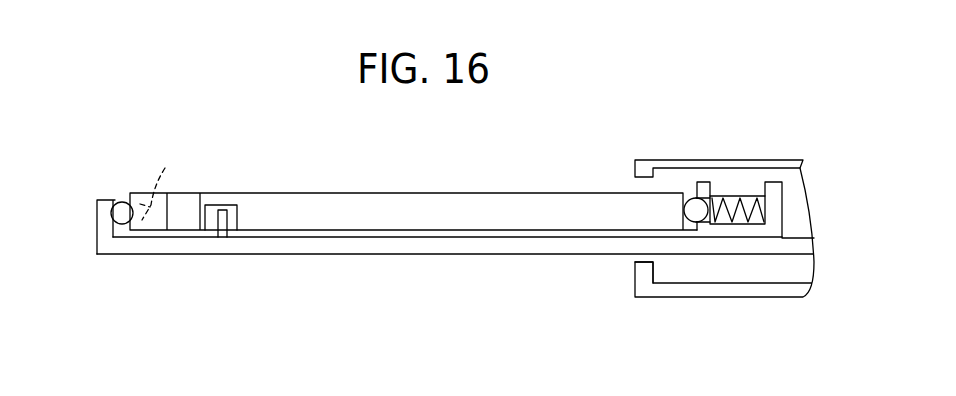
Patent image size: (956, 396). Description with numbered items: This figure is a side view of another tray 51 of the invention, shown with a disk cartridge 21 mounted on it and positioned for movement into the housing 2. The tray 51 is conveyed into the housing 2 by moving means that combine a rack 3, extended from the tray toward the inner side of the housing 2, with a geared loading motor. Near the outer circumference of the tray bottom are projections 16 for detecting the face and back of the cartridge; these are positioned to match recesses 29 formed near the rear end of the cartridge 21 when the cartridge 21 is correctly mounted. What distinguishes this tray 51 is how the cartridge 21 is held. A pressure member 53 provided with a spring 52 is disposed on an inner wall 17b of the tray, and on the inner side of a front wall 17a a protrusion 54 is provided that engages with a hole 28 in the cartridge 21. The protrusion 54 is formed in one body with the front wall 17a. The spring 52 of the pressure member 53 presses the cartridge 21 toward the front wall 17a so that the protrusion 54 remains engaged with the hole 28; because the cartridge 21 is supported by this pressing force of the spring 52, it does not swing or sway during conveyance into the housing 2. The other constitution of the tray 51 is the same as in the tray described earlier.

The housing 2 is at (645, 165).
The rack 3 is at (791, 250).
The projection 16 is at (222, 228).
The front wall 17a is at (103, 245).
The inner wall 17b is at (702, 230).
The disk cartridge 21 is at (430, 192).
The hole 28 is at (167, 187).
The recess 29 is at (234, 205).
The tray 51 is at (415, 256).
The spring 52 is at (738, 198).
The pressure member 53 is at (694, 200).
The protrusion 54 is at (125, 203).